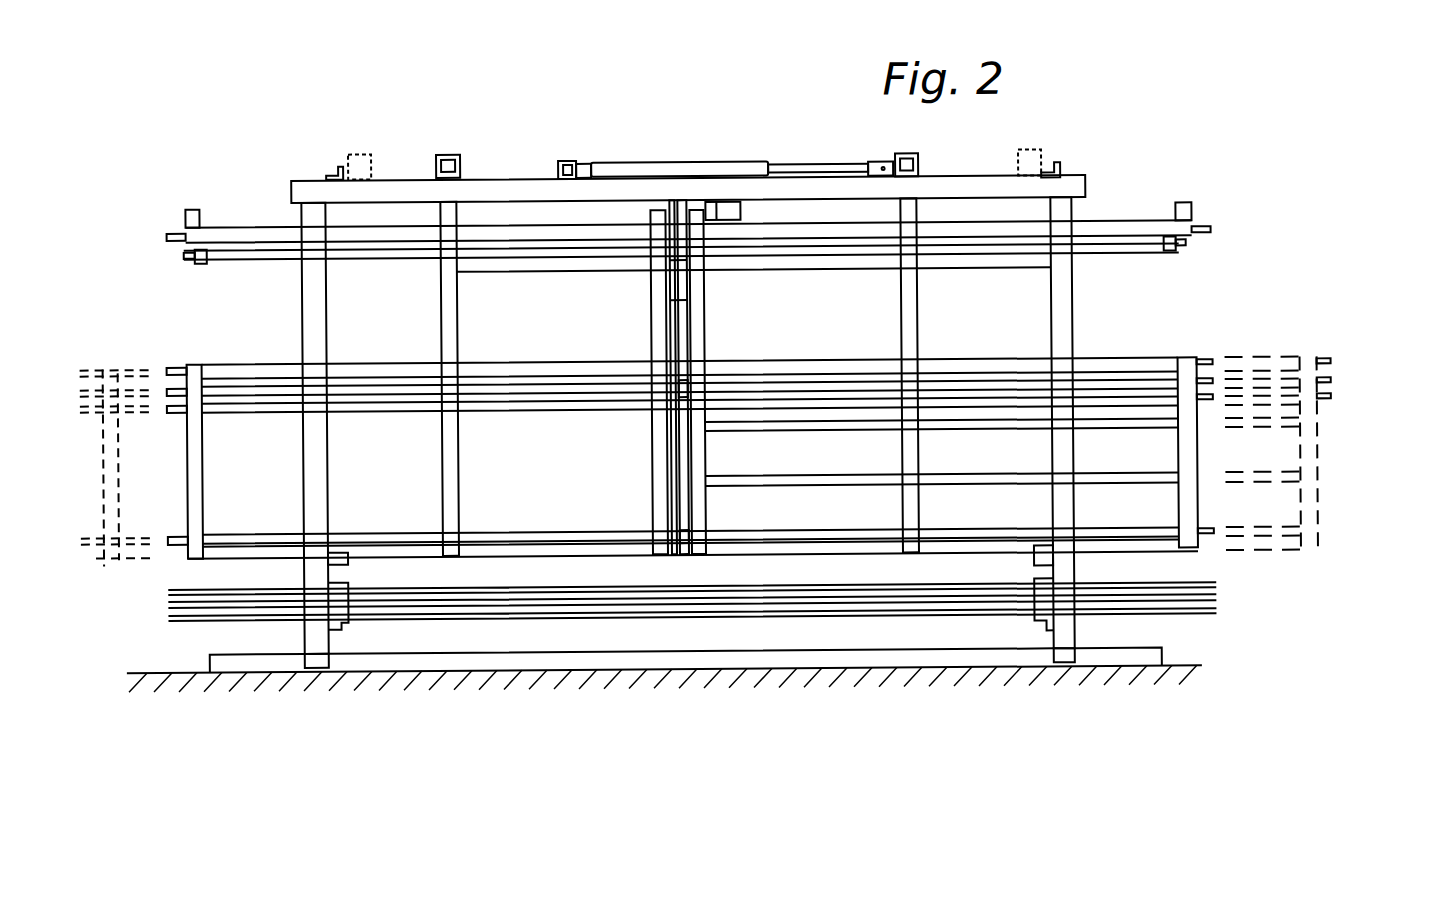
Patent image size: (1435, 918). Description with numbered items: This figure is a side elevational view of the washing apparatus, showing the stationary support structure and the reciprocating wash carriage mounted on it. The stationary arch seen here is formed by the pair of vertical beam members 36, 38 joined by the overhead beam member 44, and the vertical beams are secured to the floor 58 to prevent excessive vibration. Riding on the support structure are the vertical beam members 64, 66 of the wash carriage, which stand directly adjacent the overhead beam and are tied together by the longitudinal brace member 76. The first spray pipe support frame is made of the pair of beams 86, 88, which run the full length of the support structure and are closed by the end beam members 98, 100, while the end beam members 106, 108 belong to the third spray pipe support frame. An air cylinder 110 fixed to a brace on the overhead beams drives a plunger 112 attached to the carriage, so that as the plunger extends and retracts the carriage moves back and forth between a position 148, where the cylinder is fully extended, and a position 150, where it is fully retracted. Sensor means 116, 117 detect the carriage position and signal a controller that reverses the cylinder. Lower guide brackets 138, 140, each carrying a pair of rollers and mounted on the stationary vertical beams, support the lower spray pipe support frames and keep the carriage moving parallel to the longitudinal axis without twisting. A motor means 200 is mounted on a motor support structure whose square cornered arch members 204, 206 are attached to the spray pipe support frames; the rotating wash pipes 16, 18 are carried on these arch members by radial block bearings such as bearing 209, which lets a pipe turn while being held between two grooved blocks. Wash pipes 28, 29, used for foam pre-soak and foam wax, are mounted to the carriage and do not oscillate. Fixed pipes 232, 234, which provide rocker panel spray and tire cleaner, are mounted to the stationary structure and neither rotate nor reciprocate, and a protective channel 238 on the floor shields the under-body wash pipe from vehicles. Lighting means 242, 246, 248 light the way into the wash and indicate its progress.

The rotating wash pipe 16 is at (507, 531).
The rotating wash pipe 18 is at (1332, 384).
The wash pipe 28 is at (540, 410).
The wash pipe 29 is at (1332, 365).
The vertical beam member 36 is at (305, 283).
The vertical beam member 38 is at (1075, 314).
The overhead beam member 44 is at (942, 184).
The floor 58 is at (152, 668).
The vertical beam member 64 is at (460, 319).
The vertical beam member 66 is at (920, 315).
The longitudinal brace member 76 is at (857, 260).
The beam 86 is at (783, 363).
The beam 88 is at (512, 557).
The end beam member 98 is at (203, 461).
The end beam member 100 is at (1199, 455).
The end beam member 106 is at (192, 209).
The end beam member 108 is at (1186, 204).
The air cylinder 110 is at (632, 160).
The plunger 112 is at (797, 160).
The sensor means 116 is at (1052, 168).
The sensor means 117 is at (338, 168).
The lower guide bracket 138 is at (347, 568).
The lower guide bracket 140 is at (1034, 562).
The position 148 is at (1304, 361).
The position 150 is at (110, 368).
The motor means 200 is at (744, 210).
The square cornered arch member 204 is at (652, 318).
The square cornered arch member 206 is at (706, 312).
The radial block bearing 209 is at (1214, 232).
The fixed pipe 232 is at (1217, 604).
The fixed pipe 234 is at (1217, 618).
The protective channel 238 is at (1157, 653).
The lighting means 242 is at (1217, 591).
The lighting means 246 is at (749, 489).
The lighting means 248 is at (748, 433).